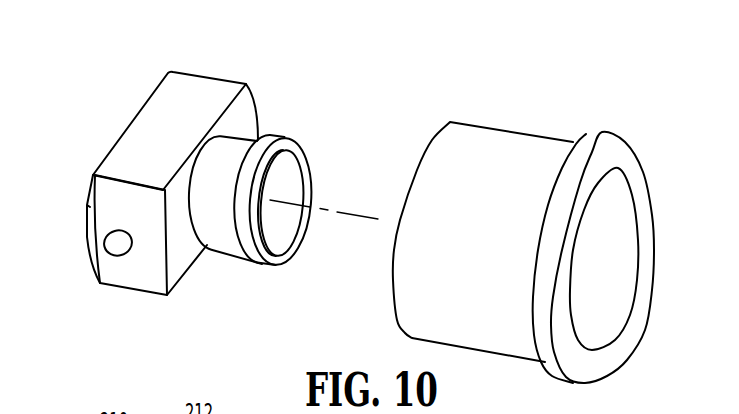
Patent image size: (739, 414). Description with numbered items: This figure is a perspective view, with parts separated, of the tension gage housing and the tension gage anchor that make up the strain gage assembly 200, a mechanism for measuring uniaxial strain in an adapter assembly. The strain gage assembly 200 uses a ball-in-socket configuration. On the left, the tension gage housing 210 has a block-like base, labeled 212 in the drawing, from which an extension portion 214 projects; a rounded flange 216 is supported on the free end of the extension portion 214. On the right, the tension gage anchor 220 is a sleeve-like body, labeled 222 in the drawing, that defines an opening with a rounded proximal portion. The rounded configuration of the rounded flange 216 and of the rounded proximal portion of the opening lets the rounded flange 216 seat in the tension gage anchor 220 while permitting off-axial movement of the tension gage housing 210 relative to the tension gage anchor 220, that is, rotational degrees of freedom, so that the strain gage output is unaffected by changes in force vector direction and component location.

The strain gage assembly 200 is at (557, 28).
The tension gage housing 210 is at (116, 43).
The base block 212 is at (133, 278).
The extension portion 214 is at (222, 237).
The rounded flange 216 is at (282, 138).
The tension gage anchor 220 is at (618, 77).
The sleeve body 222 is at (493, 152).